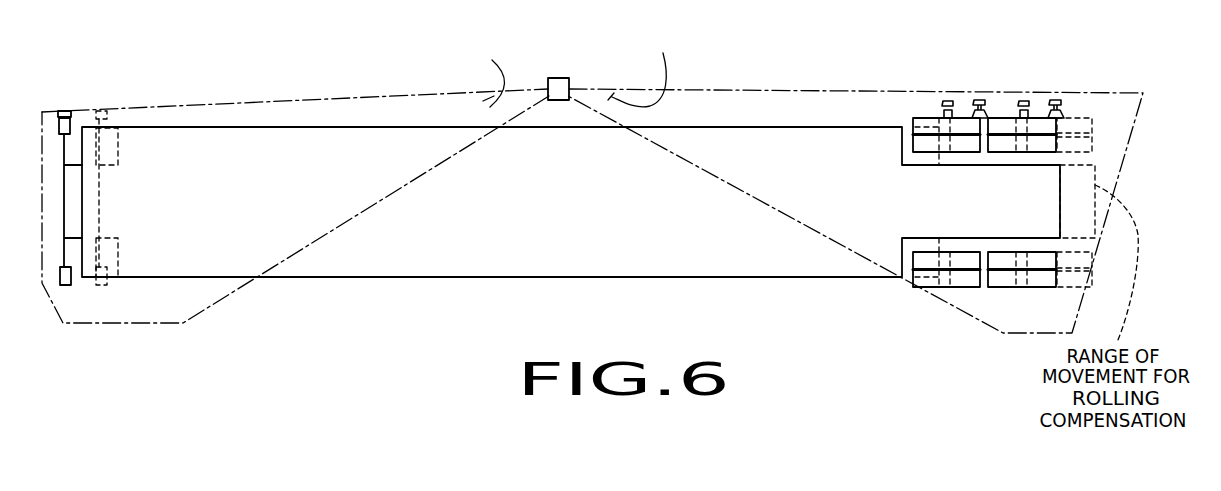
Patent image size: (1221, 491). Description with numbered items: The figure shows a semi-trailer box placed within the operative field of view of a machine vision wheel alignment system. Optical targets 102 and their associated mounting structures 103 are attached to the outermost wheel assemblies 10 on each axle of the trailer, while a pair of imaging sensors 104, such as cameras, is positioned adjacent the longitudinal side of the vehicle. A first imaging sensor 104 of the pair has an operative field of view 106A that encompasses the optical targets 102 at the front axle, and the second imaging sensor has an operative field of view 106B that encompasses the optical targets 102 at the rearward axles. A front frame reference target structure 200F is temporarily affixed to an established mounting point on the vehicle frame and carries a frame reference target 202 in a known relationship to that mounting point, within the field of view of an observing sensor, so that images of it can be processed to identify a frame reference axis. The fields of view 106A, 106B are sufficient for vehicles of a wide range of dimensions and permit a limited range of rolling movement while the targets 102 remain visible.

The wheel assembly 10 is at (910, 118).
The optical target 102 is at (945, 103).
The mounting structure 103 is at (955, 116).
The imaging sensor 104 is at (557, 78).
The operative field of view 106A is at (490, 66).
The operative field of view 106B is at (649, 66).
The frame reference target 202 is at (62, 111).
The front frame reference target structure 200F is at (63, 145).